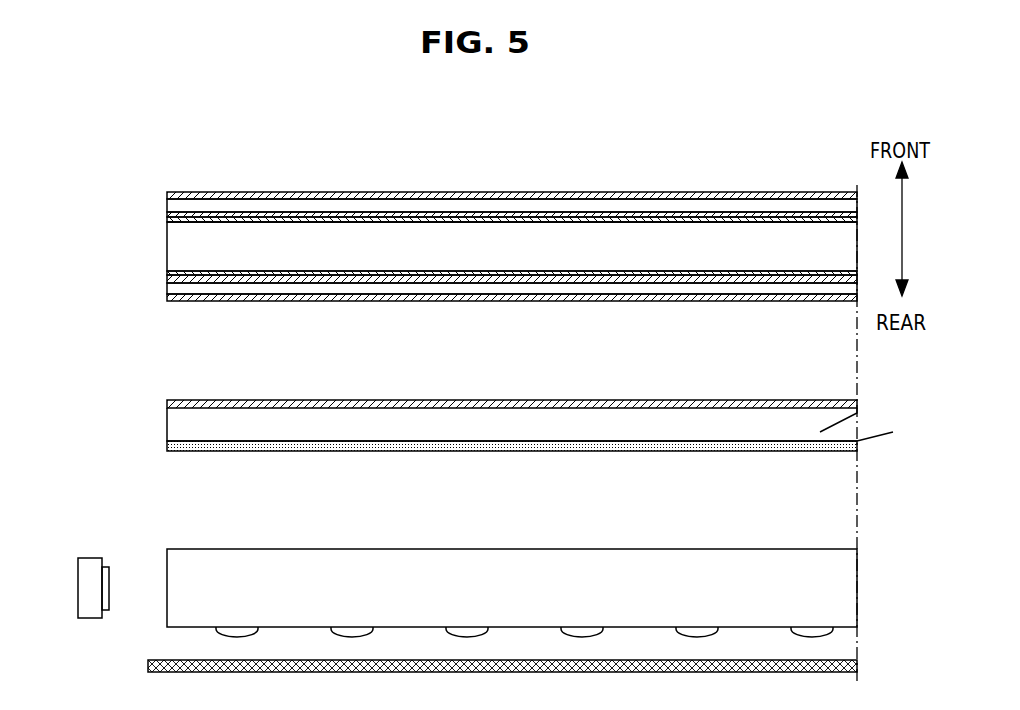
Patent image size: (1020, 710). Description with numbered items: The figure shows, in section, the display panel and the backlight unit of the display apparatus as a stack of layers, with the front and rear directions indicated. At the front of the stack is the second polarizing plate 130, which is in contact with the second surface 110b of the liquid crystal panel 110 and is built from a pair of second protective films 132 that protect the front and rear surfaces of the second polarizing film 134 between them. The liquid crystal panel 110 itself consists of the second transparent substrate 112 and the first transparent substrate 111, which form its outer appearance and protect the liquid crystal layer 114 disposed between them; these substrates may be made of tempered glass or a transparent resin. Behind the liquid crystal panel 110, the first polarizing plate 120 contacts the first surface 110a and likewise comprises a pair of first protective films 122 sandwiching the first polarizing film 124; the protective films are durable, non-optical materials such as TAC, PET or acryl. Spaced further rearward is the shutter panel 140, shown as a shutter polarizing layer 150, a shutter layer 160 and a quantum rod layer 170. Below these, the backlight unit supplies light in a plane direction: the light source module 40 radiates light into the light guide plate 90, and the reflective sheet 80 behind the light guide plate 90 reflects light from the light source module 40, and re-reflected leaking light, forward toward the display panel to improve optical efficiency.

The second polarizing plate 130 is at (80, 140).
The second protective film 132 is at (167, 192).
The second polarizing film 134 is at (167, 207).
The liquid crystal panel 110 is at (80, 222).
The second transparent substrate 112 is at (167, 220).
The liquid crystal layer 114 is at (167, 245).
The first transparent substrate 111 is at (167, 273).
The first surface 110a is at (288, 280).
The second surface 110b is at (376, 218).
The first polarizing plate 120 is at (80, 305).
The first protective film 122 is at (167, 280).
The first polarizing film 124 is at (167, 290).
The shutter panel 140 is at (80, 395).
The shutter polarizing layer 150 is at (167, 403).
The shutter layer 160 is at (167, 424).
The quantum rod layer 170 is at (167, 446).
The light guide plate 90 is at (252, 553).
The light source module 40 is at (89, 559).
The reflective sheet 80 is at (148, 666).